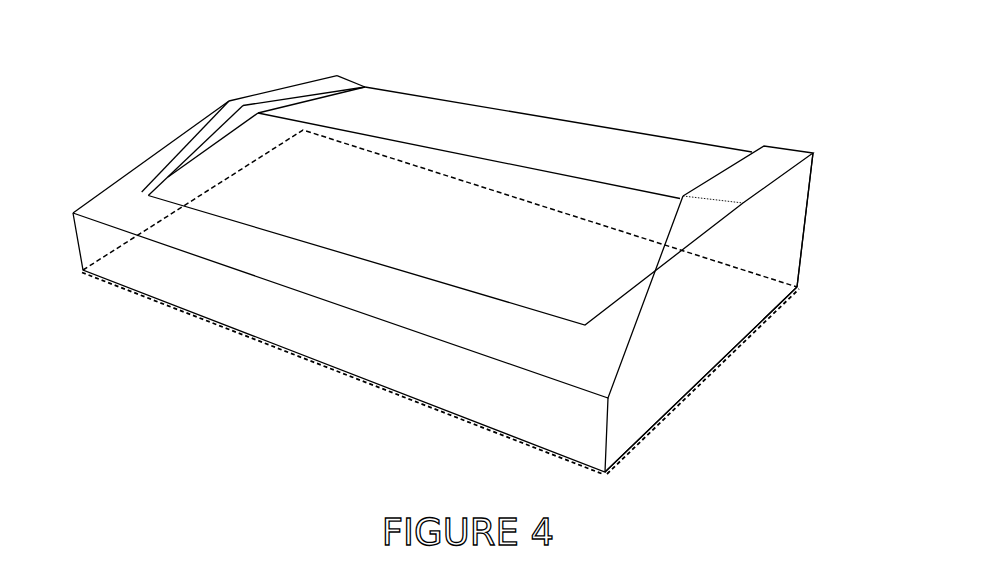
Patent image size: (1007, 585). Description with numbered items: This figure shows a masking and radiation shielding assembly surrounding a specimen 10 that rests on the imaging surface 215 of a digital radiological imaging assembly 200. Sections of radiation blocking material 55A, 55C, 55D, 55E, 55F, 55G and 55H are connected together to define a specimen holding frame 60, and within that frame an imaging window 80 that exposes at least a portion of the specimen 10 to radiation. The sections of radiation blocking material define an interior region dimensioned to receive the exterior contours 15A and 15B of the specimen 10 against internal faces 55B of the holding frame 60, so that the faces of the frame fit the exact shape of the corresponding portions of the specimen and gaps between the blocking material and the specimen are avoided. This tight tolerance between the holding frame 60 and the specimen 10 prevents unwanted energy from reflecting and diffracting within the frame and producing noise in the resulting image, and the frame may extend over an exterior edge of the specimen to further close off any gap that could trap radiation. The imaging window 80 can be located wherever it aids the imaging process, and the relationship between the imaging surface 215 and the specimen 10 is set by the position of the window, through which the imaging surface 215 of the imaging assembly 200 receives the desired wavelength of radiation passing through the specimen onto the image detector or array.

The specimen 10 is at (420, 200).
The exterior contour of the specimen 15A is at (675, 148).
The exterior contour of the specimen 15B is at (185, 182).
The section of radiation blocking material 55A is at (302, 88).
The internal face of the holding frame 55B is at (365, 87).
The section of radiation blocking material 55C is at (203, 128).
The section of radiation blocking material 55D is at (413, 313).
The section of radiation blocking material 55E is at (306, 345).
The section of radiation blocking material 55F is at (654, 316).
The section of radiation blocking material 55G is at (782, 161).
The section of radiation blocking material 55H is at (782, 265).
The specimen holding frame 60 is at (645, 412).
The imaging window 80 is at (443, 233).
The digital radiological imaging assembly 200 is at (467, 254).
The imaging surface 215 is at (242, 340).